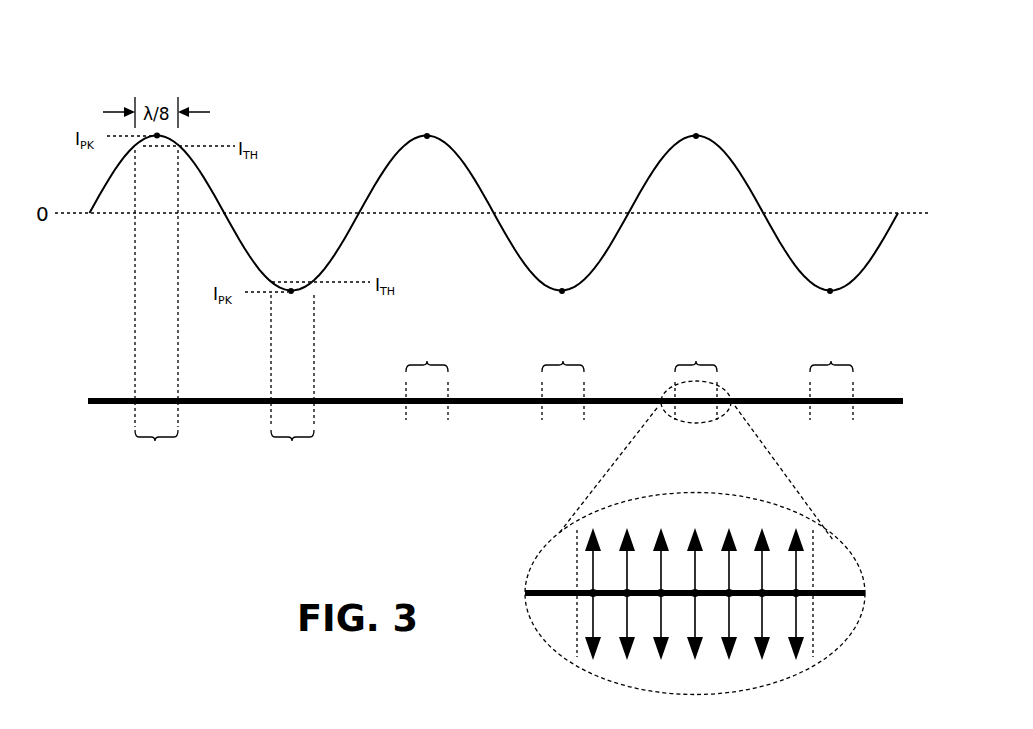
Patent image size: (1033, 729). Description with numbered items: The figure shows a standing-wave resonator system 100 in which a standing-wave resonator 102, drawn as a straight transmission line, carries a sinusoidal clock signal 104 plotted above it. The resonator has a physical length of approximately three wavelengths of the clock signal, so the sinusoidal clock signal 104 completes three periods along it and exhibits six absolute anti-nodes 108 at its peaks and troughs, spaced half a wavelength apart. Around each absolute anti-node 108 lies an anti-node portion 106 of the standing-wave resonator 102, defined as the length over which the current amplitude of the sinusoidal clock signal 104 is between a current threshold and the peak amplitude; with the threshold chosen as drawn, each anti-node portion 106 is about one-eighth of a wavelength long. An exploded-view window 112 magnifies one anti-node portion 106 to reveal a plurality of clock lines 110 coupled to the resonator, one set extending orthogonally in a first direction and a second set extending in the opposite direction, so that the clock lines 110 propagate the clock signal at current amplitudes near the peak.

The standing-wave resonator system 100 is at (116, 50).
The standing-wave resonator 102 is at (105, 399).
The sinusoidal clock signal 104 is at (372, 190).
The anti-node portions 106 is at (177, 471).
The absolute anti-nodes 108 is at (428, 136).
The clock lines 110 is at (702, 512).
The exploded-view window 112 is at (536, 560).